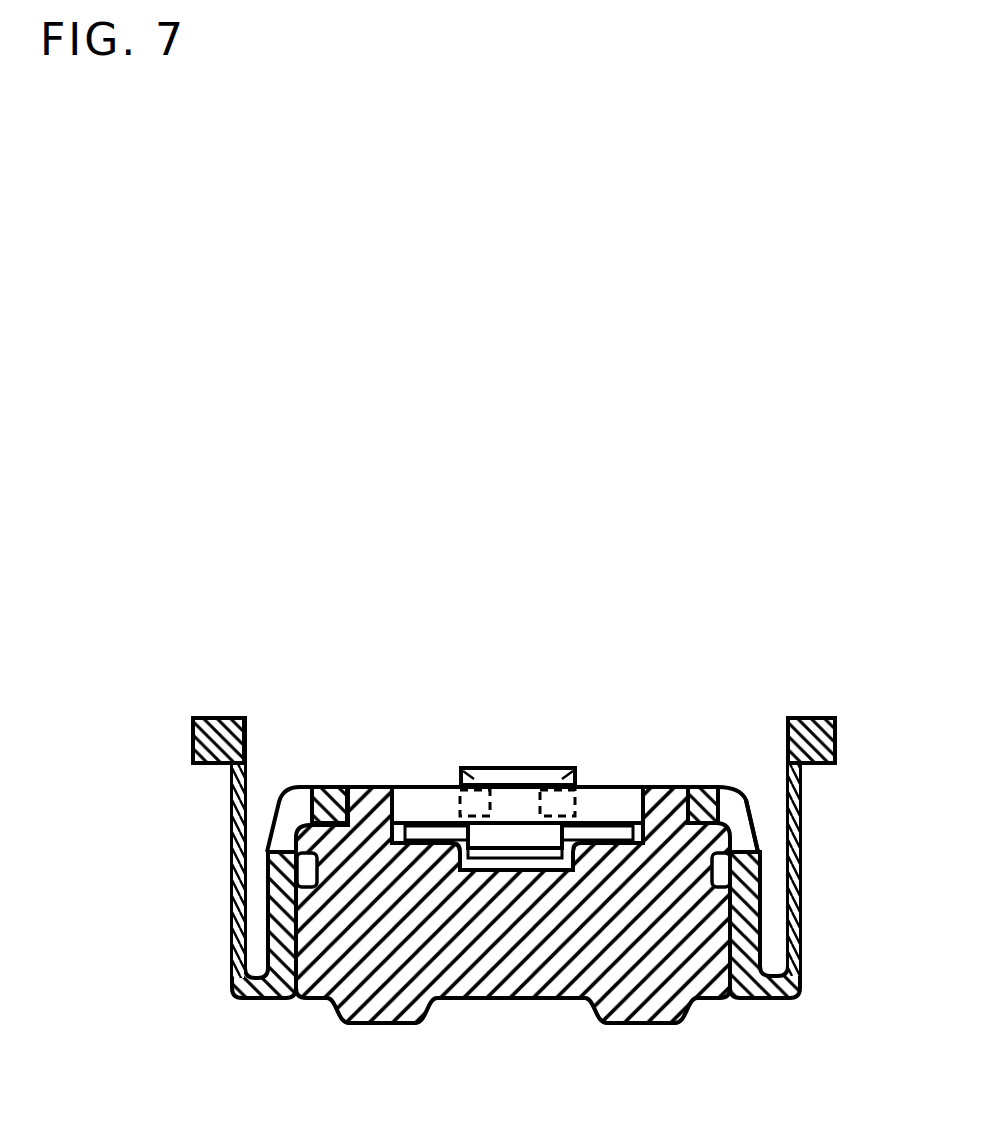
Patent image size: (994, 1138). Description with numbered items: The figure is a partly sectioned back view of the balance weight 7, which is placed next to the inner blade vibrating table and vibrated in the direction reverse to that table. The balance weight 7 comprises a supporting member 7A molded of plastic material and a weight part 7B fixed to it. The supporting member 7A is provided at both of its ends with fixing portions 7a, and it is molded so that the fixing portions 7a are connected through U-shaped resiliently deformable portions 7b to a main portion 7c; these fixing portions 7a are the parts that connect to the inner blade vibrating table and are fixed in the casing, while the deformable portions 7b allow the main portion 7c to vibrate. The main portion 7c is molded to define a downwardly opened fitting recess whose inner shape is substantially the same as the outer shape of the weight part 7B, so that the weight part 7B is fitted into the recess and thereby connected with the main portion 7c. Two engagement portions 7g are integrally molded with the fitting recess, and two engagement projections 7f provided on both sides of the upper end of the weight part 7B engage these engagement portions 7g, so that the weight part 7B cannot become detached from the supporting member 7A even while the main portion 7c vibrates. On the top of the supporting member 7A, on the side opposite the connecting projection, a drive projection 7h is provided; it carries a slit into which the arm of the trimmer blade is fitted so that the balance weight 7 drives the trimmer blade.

The balance weight 7 is at (636, 774).
The fixing portions 7a is at (220, 722).
The resiliently deformable portions 7b is at (233, 910).
The supporting member 7A is at (382, 775).
The weight part 7B is at (642, 987).
The main portion 7c is at (430, 797).
The engagement projections 7f is at (756, 842).
The engagement portions 7g is at (760, 835).
The drive projection 7h is at (577, 777).